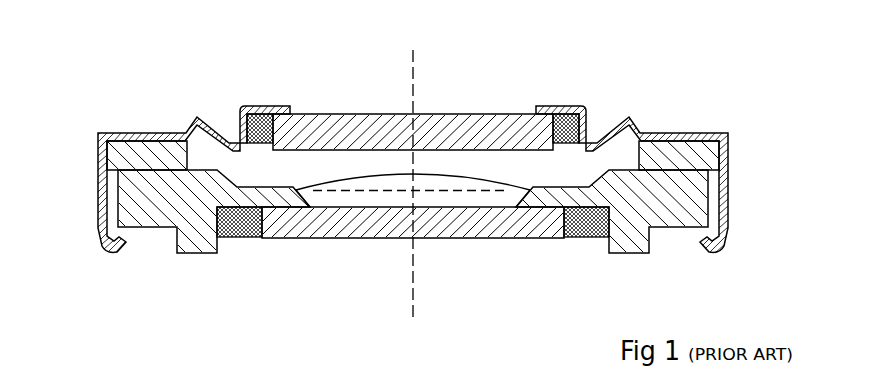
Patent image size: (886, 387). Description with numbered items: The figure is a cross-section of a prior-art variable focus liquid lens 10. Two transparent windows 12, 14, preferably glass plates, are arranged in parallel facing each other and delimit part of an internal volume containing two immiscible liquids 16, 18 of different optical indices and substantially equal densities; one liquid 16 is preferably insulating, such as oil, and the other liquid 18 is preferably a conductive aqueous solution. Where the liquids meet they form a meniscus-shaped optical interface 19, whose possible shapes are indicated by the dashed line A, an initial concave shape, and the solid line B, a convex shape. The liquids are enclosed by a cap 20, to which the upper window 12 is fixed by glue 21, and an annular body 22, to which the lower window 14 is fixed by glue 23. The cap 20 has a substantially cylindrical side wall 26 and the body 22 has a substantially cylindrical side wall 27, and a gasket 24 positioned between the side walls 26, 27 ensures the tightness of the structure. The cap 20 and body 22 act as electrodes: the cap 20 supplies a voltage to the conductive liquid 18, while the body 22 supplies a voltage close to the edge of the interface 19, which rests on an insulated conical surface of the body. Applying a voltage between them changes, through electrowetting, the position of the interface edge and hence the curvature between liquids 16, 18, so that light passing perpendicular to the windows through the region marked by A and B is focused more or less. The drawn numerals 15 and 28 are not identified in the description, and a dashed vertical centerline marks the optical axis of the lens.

The variable focus lens 10 is at (640, 72).
The transparent window 12 is at (487, 114).
The transparent window 14 is at (490, 238).
The gap between upper plate and lens 15 is at (345, 160).
The liquid 16 is at (350, 200).
The liquid 18 is at (385, 163).
The optical interface 19 is at (295, 197).
The cap 20 is at (413, 168).
The glue 21 is at (262, 107).
The body 22 is at (617, 258).
The glue 23 is at (243, 237).
The gasket 24 is at (690, 134).
The side wall 26 is at (98, 160).
The side wall 27 is at (728, 200).
The lens peripheral edge 28 is at (527, 237).
The line A is at (520, 187).
The line B is at (447, 188).